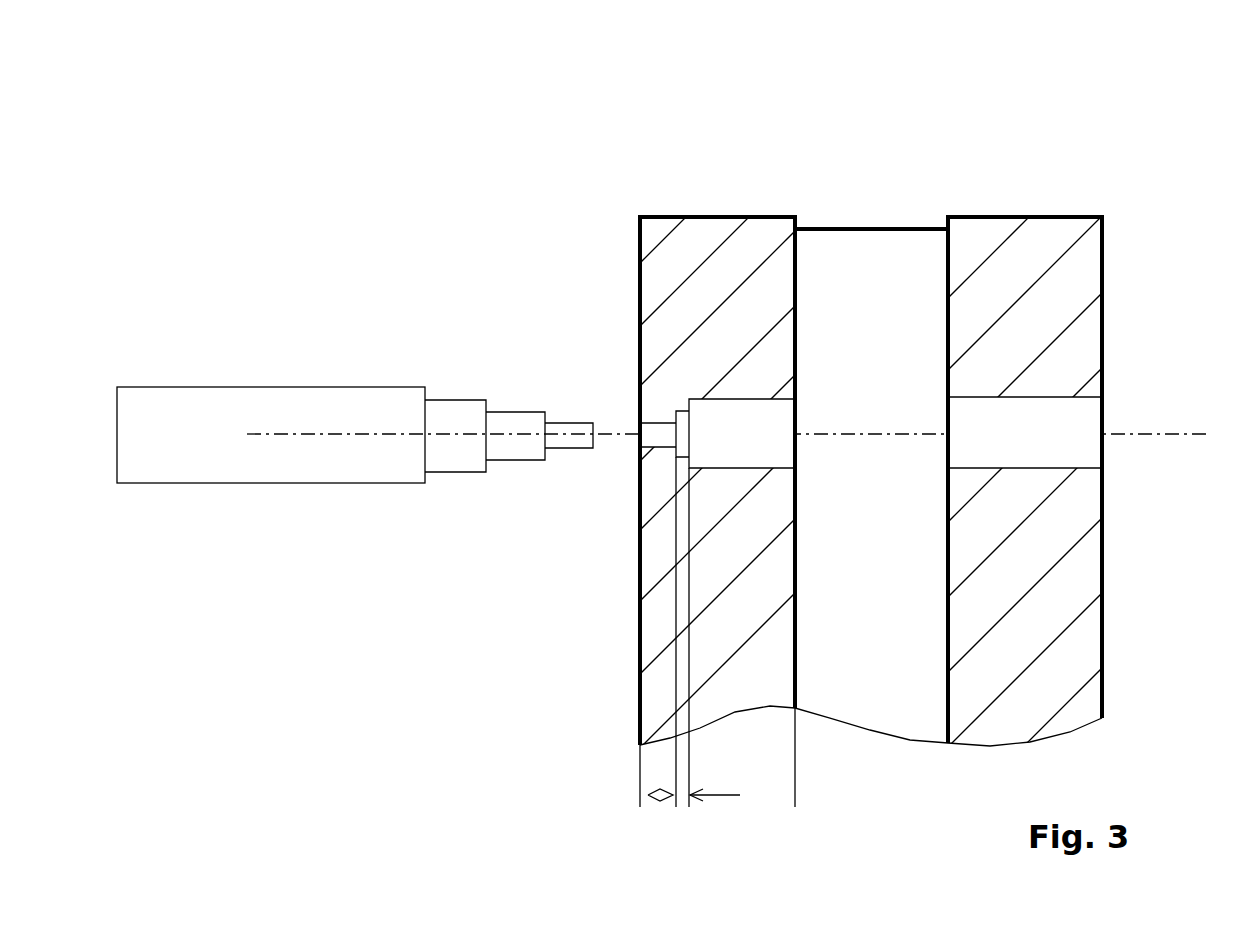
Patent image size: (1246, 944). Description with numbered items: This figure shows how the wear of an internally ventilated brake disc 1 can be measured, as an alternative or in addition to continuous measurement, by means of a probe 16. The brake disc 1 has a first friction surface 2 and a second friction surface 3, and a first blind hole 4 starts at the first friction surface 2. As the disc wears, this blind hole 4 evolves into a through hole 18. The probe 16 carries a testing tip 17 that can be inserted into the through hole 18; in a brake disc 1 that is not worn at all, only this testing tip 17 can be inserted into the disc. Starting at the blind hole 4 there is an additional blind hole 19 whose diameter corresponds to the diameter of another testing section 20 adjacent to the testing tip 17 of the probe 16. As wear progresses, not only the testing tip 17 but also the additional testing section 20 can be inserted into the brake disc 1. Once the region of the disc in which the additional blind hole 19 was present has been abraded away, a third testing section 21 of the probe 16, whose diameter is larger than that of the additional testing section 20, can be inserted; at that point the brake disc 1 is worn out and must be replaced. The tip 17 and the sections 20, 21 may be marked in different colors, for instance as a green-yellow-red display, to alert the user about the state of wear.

The brake disc 1 is at (943, 128).
The first friction surface 2 is at (1103, 275).
The second friction surface 3 is at (640, 265).
The first blind hole 4 is at (770, 420).
The probe 16 is at (283, 292).
The testing tip 17 is at (568, 384).
The through hole 18 is at (655, 438).
The additional blind hole 19 is at (683, 450).
The additional testing section 20 is at (522, 447).
The third testing section 21 is at (450, 458).